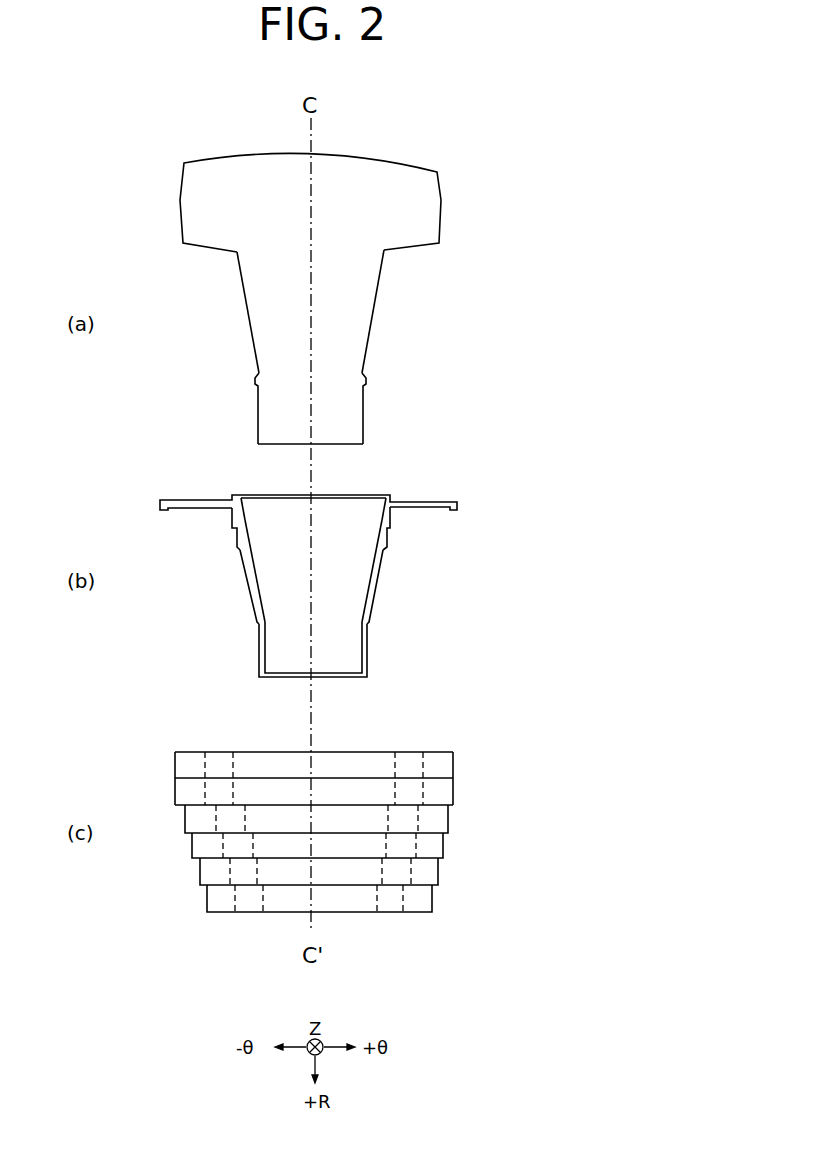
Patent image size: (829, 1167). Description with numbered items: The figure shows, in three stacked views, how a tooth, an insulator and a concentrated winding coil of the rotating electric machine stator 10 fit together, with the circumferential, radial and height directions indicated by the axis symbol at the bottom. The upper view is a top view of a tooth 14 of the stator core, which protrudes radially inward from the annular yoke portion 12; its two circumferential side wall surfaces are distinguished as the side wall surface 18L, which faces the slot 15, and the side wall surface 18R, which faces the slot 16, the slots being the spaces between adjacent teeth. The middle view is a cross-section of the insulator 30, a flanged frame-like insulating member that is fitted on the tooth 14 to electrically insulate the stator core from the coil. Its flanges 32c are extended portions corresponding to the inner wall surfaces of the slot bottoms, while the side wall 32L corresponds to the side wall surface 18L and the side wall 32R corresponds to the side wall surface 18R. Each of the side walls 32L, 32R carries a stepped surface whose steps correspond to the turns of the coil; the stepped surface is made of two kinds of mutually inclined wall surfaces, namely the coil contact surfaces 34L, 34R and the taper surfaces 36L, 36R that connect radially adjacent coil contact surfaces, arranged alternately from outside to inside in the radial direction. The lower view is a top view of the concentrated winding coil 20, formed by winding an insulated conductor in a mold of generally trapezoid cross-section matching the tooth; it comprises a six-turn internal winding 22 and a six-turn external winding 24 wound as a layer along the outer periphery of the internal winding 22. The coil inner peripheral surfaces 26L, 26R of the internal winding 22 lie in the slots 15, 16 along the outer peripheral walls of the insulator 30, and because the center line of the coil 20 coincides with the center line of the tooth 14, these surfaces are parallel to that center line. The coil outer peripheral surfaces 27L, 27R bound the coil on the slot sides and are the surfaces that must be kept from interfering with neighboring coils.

The rotating electric machine stator 10 is at (462, 175).
The yoke portion 12 is at (428, 227).
The tooth 14 is at (340, 433).
The slot 15 is at (235, 404).
The slot 16 is at (389, 418).
The side wall surface 18L is at (249, 343).
The side wall surface 18R is at (371, 338).
The insulator 30 is at (456, 502).
The flange 32c is at (185, 510).
The side wall 32L is at (258, 654).
The side wall 32R is at (370, 650).
The coil contact surface 34L is at (243, 563).
The coil contact surface 34R is at (382, 563).
The taper surface 36L is at (242, 585).
The taper surface 36R is at (377, 585).
The concentrated winding coil 20 is at (445, 960).
The internal winding 22 is at (388, 900).
The external winding 24 is at (420, 900).
The coil inner peripheral surface 26L is at (237, 767).
The coil inner peripheral surface 26R is at (389, 768).
The coil outer peripheral surface 27L is at (172, 762).
The coil outer peripheral surface 27R is at (456, 765).